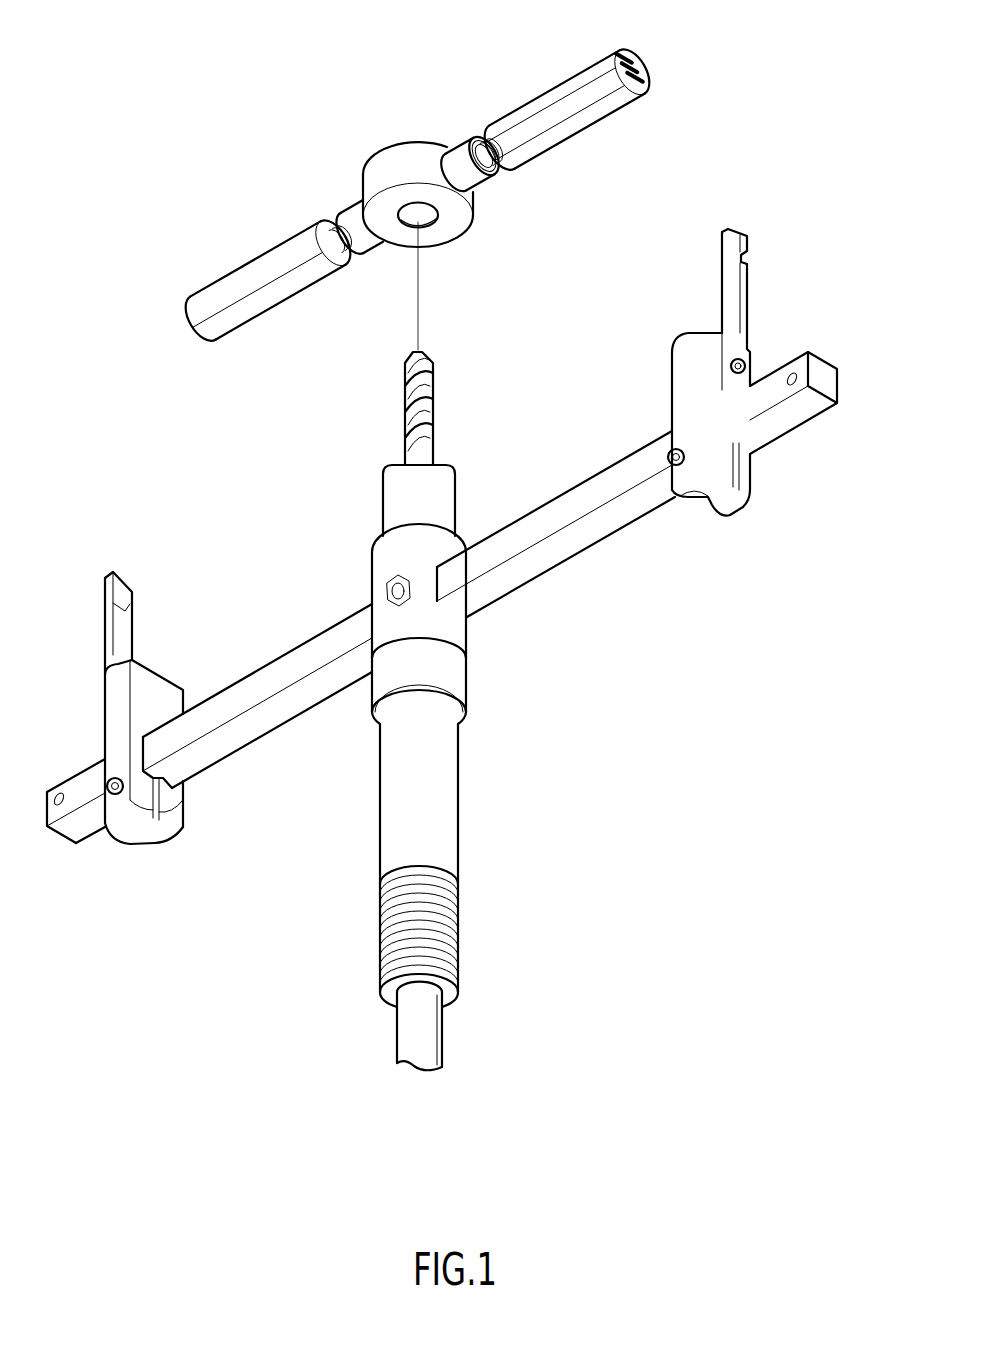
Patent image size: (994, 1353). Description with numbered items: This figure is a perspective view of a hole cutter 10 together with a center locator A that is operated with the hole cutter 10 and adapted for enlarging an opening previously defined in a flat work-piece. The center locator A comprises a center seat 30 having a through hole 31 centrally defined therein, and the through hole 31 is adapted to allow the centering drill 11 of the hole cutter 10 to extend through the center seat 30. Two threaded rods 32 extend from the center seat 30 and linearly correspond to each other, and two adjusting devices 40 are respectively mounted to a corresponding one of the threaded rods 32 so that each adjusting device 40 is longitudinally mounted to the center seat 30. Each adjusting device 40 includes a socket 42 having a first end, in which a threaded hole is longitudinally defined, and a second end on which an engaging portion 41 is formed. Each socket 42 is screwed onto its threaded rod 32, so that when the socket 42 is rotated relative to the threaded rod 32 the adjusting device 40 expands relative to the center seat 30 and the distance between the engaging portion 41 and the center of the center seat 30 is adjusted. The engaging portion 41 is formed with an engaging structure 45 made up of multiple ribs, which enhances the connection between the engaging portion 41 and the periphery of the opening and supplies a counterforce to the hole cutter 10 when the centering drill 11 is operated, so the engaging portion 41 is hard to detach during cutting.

The hole cutter 10 is at (540, 618).
The centering drill 11 is at (403, 400).
The center seat 30 is at (448, 223).
The through hole 31 is at (427, 226).
The threaded rod 32 is at (486, 131).
The adjusting device 40 is at (417, 207).
The engaging portion 41 is at (418, 207).
The socket 42 is at (572, 128).
The engaging structure 45 is at (648, 69).
The center locator A is at (295, 107).